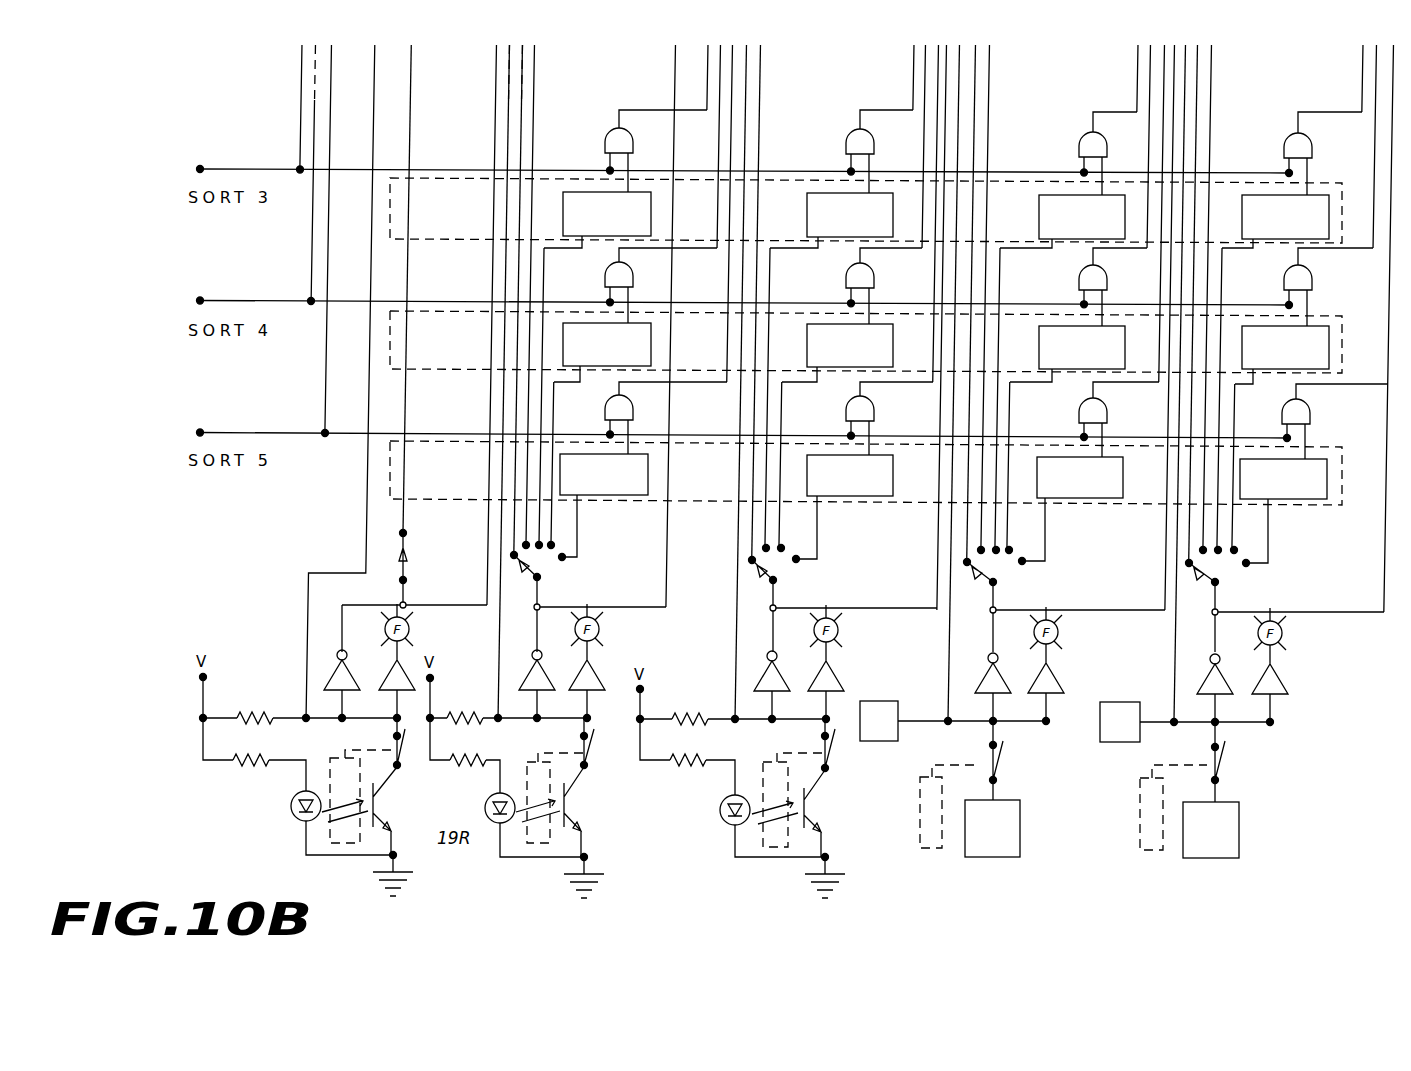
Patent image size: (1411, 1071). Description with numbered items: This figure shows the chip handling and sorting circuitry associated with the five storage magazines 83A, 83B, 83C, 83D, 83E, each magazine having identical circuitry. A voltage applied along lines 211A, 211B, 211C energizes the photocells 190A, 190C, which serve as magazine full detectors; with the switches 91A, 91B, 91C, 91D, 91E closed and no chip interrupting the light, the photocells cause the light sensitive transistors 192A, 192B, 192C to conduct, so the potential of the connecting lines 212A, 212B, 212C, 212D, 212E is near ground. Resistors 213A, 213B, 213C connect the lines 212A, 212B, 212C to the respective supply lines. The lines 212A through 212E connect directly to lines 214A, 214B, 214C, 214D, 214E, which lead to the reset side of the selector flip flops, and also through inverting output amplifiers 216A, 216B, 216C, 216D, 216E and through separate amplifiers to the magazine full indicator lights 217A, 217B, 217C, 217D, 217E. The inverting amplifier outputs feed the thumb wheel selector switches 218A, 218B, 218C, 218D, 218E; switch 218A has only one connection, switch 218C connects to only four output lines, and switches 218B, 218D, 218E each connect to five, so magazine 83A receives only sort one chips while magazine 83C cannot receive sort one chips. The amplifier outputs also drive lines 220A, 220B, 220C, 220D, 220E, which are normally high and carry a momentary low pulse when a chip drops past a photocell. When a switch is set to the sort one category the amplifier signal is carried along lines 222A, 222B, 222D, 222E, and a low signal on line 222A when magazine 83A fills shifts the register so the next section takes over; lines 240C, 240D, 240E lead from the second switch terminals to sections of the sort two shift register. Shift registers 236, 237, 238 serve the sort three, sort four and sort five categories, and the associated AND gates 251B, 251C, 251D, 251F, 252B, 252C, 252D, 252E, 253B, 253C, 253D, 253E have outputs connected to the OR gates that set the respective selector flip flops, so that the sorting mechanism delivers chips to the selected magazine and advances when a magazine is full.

The shift register 236 is at (446, 246).
The shift register 237 is at (480, 376).
The shift register 238 is at (455, 501).
The AND gate 251B is at (607, 146).
The AND gate 251C is at (847, 142).
The AND gate 251D is at (1079, 152).
The AND gate 251F is at (1285, 150).
The AND gate 252B is at (604, 275).
The AND gate 252C is at (846, 277).
The AND gate 252D is at (1079, 281).
The AND gate 252E is at (1285, 283).
The AND gate 253B is at (634, 402).
The AND gate 253C is at (846, 405).
The AND gate 253D is at (1079, 407).
The AND gate 253E is at (1355, 416).
The line 214A is at (373, 88).
The line 214B is at (496, 68).
The line 214C is at (746, 58).
The line 214D is at (949, 636).
The line 214E is at (1175, 659).
The line 220A is at (492, 540).
The line 220B is at (666, 533).
The line 220C is at (913, 81).
The line 220D is at (1165, 541).
The line 220E is at (1384, 565).
The line 240C is at (760, 115).
The line 240D is at (988, 81).
The line 240E is at (1212, 72).
The line 222A is at (405, 405).
The line 222B is at (517, 413).
The line 222D is at (969, 405).
The line 222E is at (1189, 405).
The thumb wheel selector switch 218A is at (404, 580).
The thumb wheel selector switch 218B is at (540, 572).
The thumb wheel selector switch 218C is at (776, 572).
The thumb wheel selector switch 218D is at (992, 574).
The thumb wheel selector switch 218E is at (1220, 575).
The inverting output amplifier 216A is at (336, 651).
The inverting output amplifier 216B is at (530, 660).
The inverting output amplifier 216C is at (765, 664).
The inverting output amplifier 216D is at (985, 672).
The inverting output amplifier 216E is at (1207, 675).
The magazine full indicator light 217A is at (385, 625).
The magazine full indicator light 217B is at (617, 602).
The magazine full indicator light 217C is at (839, 630).
The magazine full indicator light 217D is at (1060, 634).
The magazine full indicator light 217E is at (1283, 636).
The line 211A is at (203, 738).
The line 211B is at (430, 746).
The line 211C is at (642, 712).
The connecting line 212A is at (300, 714).
The connecting line 212B is at (518, 727).
The connecting line 212C is at (723, 764).
The connecting line 212D is at (930, 723).
The connecting line 212E is at (1157, 725).
The resistor 213A is at (250, 690).
The resistor 213B is at (470, 690).
The resistor 213C is at (703, 730).
The photocell 190A is at (291, 801).
The photocell 190C is at (720, 815).
The light sensitive transistor 192A is at (382, 806).
The light sensitive transistor 192B is at (576, 816).
The light sensitive transistor 192C is at (816, 815).
The switch 91A is at (390, 742).
The switch 91B is at (590, 756).
The switch 91C is at (830, 757).
The switch 91D is at (998, 768).
The switch 91E is at (1222, 762).
The magazine 83A is at (330, 838).
The magazine 83B is at (522, 843).
The magazine 83C is at (760, 850).
The magazine 83D is at (932, 856).
The magazine 83E is at (1140, 842).